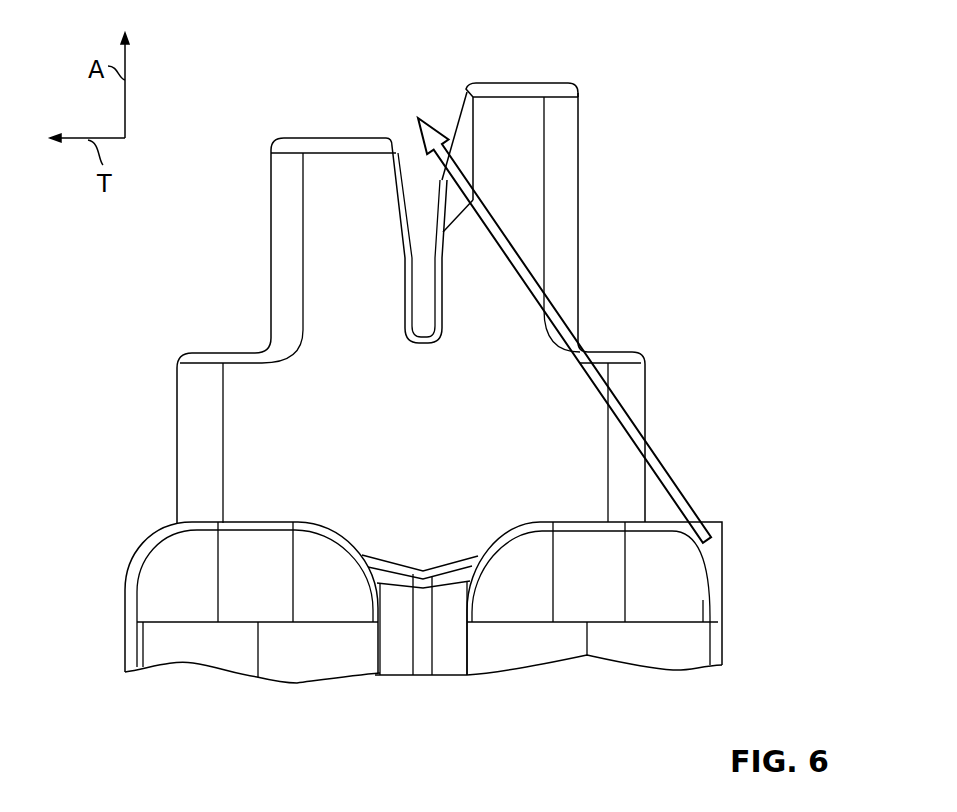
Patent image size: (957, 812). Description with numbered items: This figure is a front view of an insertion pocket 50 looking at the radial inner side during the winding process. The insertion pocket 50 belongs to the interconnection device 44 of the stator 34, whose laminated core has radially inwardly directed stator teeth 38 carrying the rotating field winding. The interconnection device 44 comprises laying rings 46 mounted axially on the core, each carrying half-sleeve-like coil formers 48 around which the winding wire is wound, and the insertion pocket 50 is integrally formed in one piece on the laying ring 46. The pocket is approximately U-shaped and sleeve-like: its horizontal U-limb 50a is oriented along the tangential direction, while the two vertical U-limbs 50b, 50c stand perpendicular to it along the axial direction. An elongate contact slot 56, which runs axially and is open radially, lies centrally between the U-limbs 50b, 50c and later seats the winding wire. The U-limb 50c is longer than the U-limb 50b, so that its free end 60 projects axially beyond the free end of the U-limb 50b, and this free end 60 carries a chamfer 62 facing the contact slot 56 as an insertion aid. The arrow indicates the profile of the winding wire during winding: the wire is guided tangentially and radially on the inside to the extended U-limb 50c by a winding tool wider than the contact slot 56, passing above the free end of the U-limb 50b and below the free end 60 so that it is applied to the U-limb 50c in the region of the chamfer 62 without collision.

The stator 34 is at (568, 809).
The stator teeth 38 is at (285, 645).
The interconnection device 44 is at (397, 647).
The laying ring 46 is at (420, 659).
The coil former 48 is at (180, 597).
The insertion pocket 50 is at (690, 197).
The horizontal U-limb 50a is at (635, 405).
The vertical U-limb 50b is at (280, 247).
The vertical U-limb 50c is at (573, 125).
The contact slot 56 is at (410, 155).
The free end 60 is at (523, 83).
The chamfer 62 is at (463, 108).